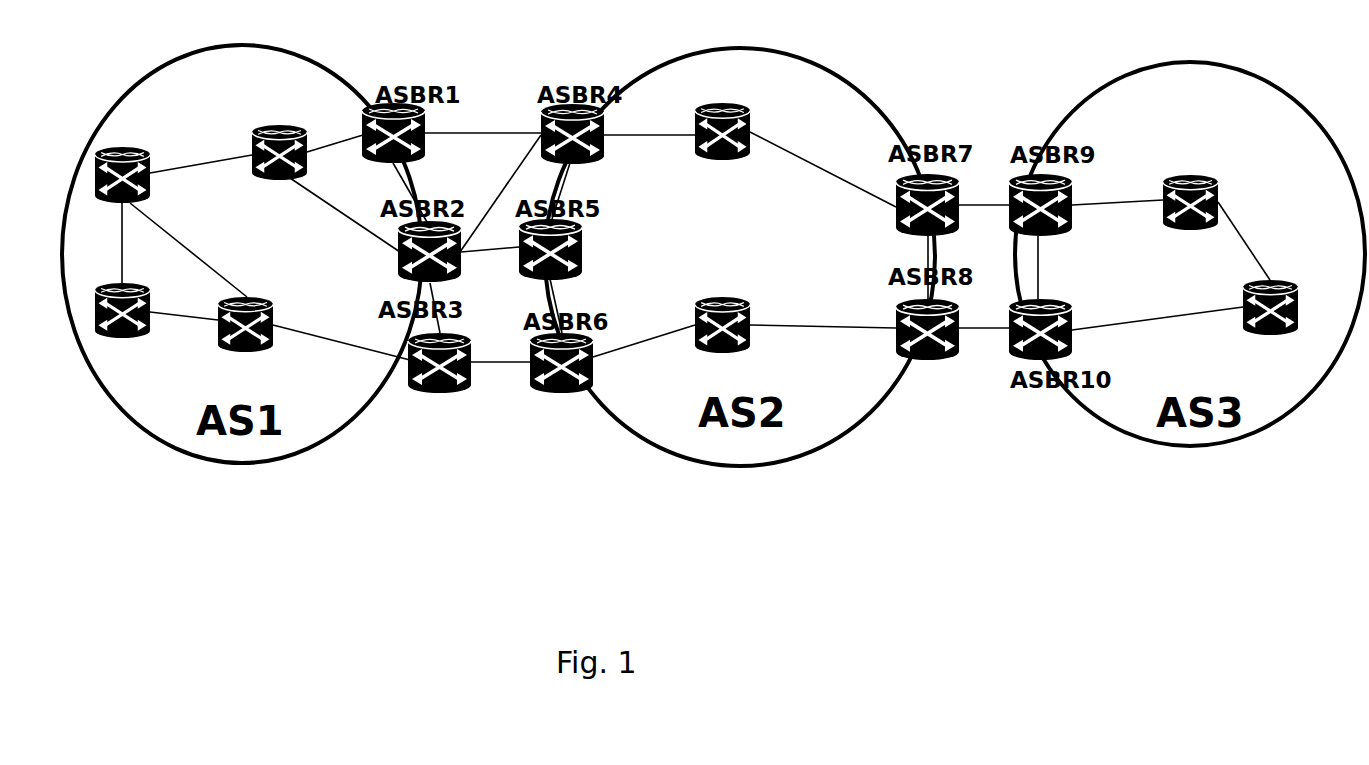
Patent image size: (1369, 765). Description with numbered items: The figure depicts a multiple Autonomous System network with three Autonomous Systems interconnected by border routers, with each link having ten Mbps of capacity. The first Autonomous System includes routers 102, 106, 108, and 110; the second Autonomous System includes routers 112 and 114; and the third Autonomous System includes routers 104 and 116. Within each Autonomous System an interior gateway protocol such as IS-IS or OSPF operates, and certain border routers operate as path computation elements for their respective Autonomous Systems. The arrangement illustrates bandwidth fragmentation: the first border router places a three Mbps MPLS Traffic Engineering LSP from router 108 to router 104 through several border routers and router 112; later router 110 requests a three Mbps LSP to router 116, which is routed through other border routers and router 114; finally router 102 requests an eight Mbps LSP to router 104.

The router 102 is at (140, 147).
The router 104 is at (1208, 175).
The router 106 is at (140, 283).
The router 108 is at (297, 125).
The router 110 is at (263, 297).
The router 112 is at (742, 103).
The router 114 is at (742, 297).
The router 116 is at (1288, 280).